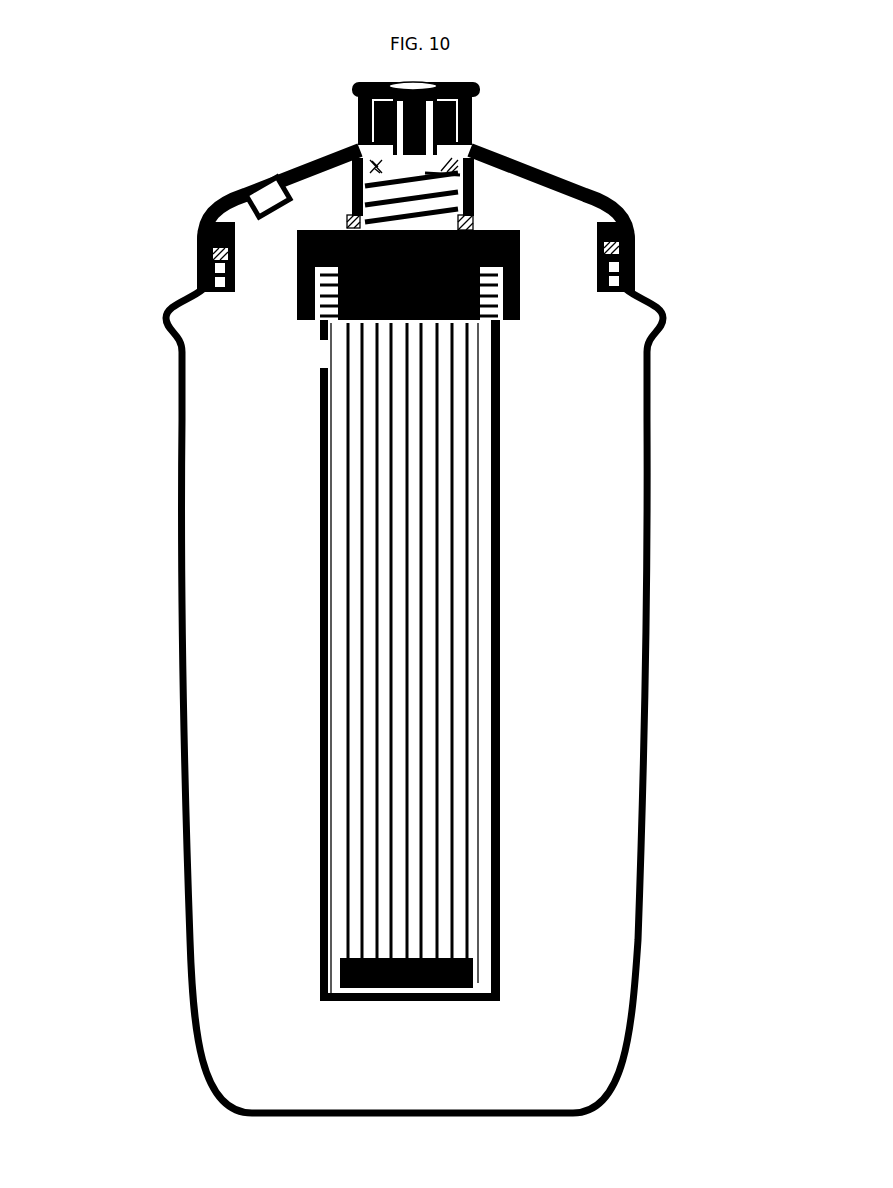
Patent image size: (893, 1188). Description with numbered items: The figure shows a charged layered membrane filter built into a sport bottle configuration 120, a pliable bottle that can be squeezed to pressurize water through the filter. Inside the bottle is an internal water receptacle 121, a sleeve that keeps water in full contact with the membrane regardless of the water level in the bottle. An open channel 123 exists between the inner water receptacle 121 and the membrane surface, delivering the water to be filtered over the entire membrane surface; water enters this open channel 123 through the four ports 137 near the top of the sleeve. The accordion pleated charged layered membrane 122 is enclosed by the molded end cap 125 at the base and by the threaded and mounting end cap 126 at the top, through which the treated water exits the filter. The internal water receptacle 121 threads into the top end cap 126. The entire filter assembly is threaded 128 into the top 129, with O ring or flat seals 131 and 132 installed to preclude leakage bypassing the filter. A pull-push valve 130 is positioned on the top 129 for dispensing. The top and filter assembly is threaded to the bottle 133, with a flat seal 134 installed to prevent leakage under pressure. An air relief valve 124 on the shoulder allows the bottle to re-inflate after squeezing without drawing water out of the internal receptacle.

The sport bottle 120 is at (653, 412).
The internal water receptacle 121 is at (312, 453).
The accordion pleated charged layered membrane 122 is at (378, 633).
The open channel 123 is at (487, 540).
The air relief valve 124 is at (250, 190).
The molded end cap 125 is at (473, 958).
The threaded and mounting end cap 126 is at (520, 298).
The thread 128 is at (473, 192).
The top 129 is at (488, 157).
The pull-push valve 130 is at (473, 108).
The O ring or flat seal 131 is at (353, 157).
The lower seal 132 is at (348, 218).
The bottle threads 133 is at (633, 252).
The flat seal 134 is at (200, 242).
The ports 137 is at (312, 345).